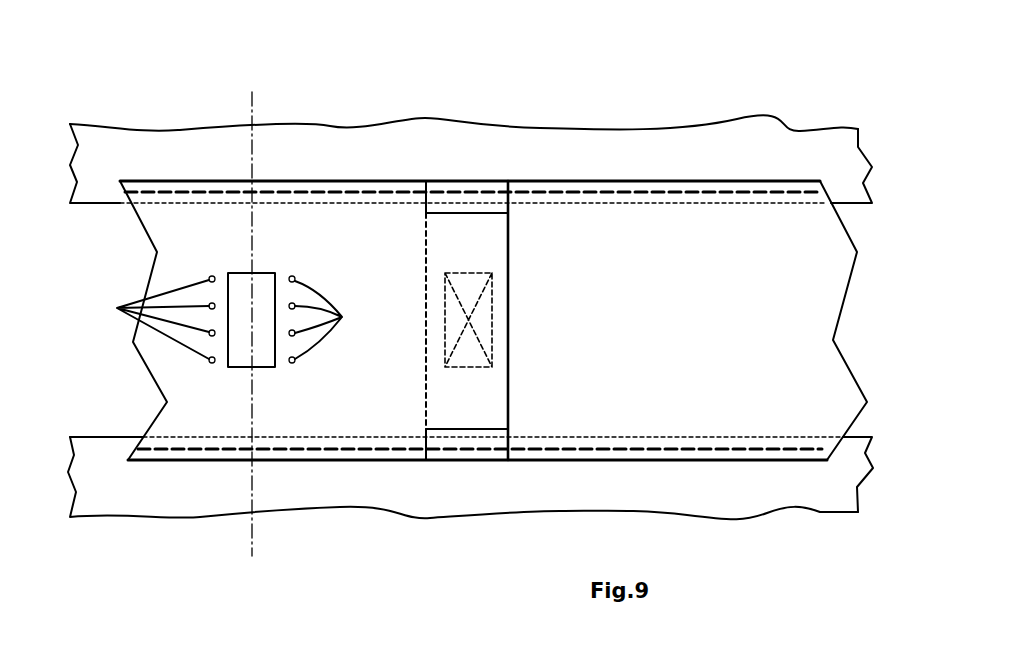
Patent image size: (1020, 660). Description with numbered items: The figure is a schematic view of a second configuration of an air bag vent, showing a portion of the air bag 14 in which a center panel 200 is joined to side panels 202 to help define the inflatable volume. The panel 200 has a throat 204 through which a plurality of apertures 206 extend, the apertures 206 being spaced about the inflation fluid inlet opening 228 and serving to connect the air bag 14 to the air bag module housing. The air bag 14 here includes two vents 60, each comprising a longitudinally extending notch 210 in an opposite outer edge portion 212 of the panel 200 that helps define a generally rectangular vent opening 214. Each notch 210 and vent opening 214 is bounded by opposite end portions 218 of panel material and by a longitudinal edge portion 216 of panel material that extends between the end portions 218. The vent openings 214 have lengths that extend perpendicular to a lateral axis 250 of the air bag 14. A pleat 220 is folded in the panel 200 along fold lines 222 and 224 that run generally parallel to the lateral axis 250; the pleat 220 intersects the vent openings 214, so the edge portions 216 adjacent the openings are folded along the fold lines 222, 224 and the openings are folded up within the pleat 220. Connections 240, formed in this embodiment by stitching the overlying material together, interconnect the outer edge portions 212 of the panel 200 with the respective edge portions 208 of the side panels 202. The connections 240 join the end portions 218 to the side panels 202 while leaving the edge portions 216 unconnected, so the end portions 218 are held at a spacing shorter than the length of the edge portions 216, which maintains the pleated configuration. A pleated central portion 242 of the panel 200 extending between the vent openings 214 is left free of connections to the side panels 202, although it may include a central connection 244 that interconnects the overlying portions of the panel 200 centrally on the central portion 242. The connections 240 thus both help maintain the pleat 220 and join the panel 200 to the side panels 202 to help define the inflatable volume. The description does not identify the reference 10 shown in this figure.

The air bag 14 is at (130, 141).
The side panel 202 is at (178, 135).
The lateral axis 250 is at (253, 105).
The connection 240 is at (293, 190).
The end portion 218 is at (418, 186).
The vent opening 214 is at (478, 174).
The vent 60 is at (492, 170).
The notch 210 is at (490, 213).
The outer edge portion 212 is at (648, 183).
The panel 200 is at (683, 238).
The edge portion 208 is at (92, 190).
The inflation fluid inlet opening 228 is at (240, 287).
The throat 204 is at (282, 277).
The fold line 224 is at (426, 240).
The longitudinal edge portion 216 is at (492, 216).
The fold line 222 is at (508, 262).
The aperture 206 is at (227, 319).
The central connection 244 is at (492, 308).
The pleated central portion 242 is at (504, 348).
The pleat 220 is at (424, 393).
The direction 10 is at (360, 455).